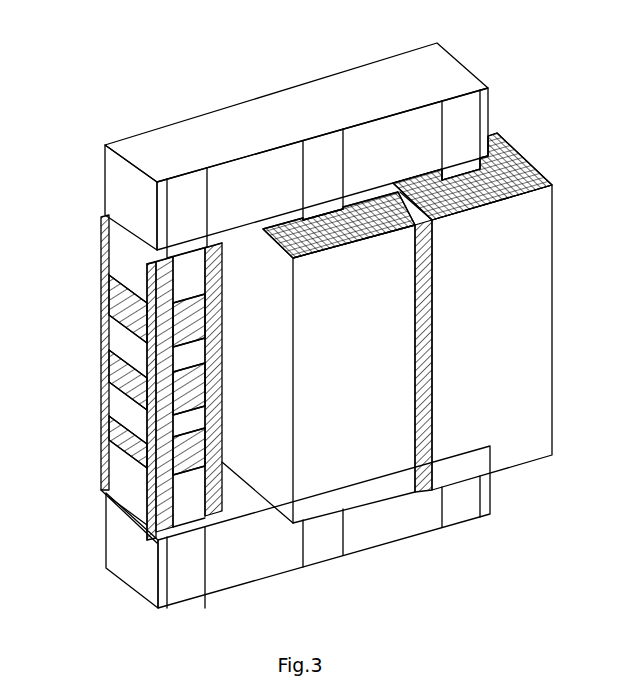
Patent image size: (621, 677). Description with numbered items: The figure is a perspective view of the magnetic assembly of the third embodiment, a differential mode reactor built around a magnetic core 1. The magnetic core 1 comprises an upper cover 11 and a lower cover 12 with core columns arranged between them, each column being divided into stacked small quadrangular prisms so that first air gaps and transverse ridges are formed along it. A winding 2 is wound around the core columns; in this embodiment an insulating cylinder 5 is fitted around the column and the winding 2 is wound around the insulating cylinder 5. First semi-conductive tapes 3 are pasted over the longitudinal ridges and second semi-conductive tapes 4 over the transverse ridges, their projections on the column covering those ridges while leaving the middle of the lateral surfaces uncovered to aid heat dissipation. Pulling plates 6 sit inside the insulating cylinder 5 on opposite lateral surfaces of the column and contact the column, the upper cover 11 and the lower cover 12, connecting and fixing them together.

The magnetic core 1 is at (184, 92).
The upper cover 11 is at (367, 80).
The lower cover 12 is at (397, 530).
The winding 2 is at (527, 333).
The first semi-conductive tape 3 is at (105, 270).
The second semi-conductive tape 4 is at (224, 312).
The insulating cylinder 5 is at (113, 243).
The pulling plate 6 is at (455, 503).